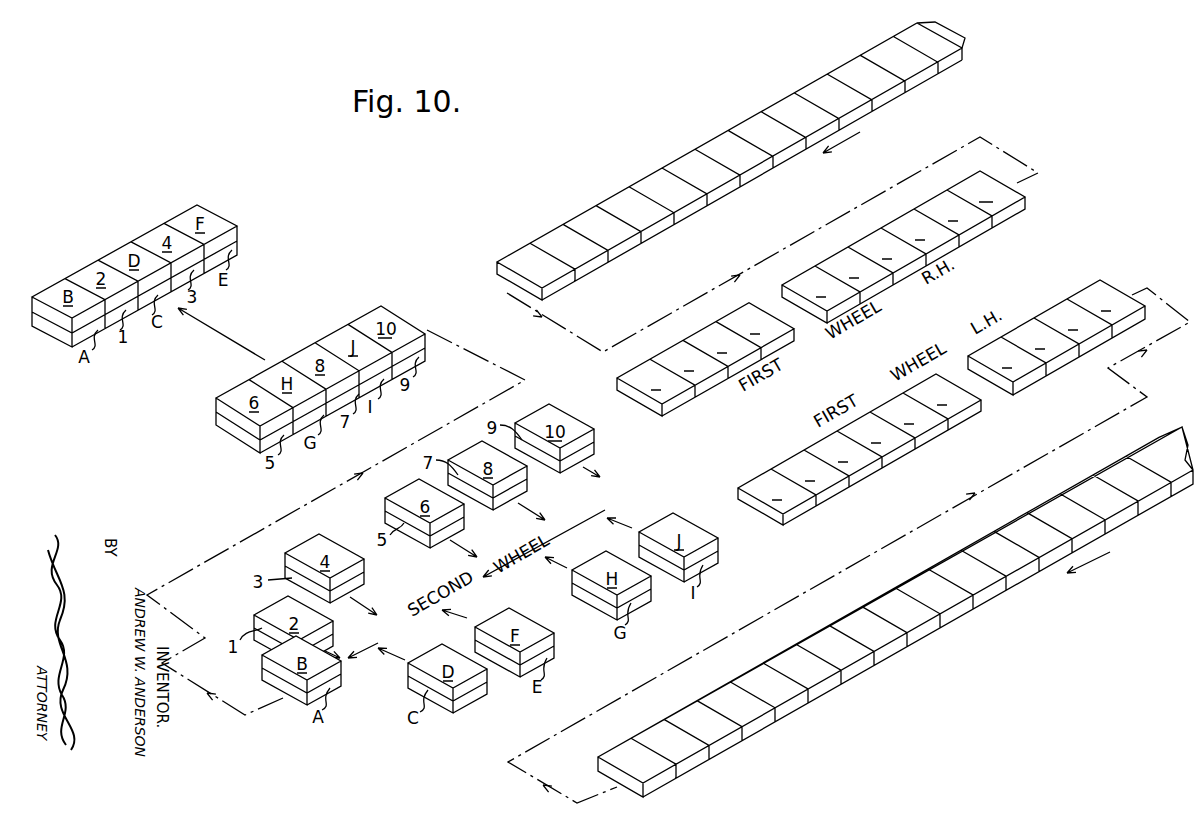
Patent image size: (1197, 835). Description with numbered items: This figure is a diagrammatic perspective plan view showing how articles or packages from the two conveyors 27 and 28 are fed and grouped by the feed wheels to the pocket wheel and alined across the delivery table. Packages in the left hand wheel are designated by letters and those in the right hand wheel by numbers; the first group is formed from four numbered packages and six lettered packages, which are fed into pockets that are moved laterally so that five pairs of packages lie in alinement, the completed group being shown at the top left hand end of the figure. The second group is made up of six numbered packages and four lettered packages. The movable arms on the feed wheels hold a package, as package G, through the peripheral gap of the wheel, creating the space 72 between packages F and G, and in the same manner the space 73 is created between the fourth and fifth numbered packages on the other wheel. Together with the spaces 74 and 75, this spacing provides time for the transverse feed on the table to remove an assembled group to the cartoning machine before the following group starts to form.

The conveyor 27 is at (1000, 609).
The conveyor 28 is at (706, 139).
The space 72 is at (984, 387).
The space 73 is at (794, 316).
The space 74 is at (624, 413).
The space 75 is at (747, 523).